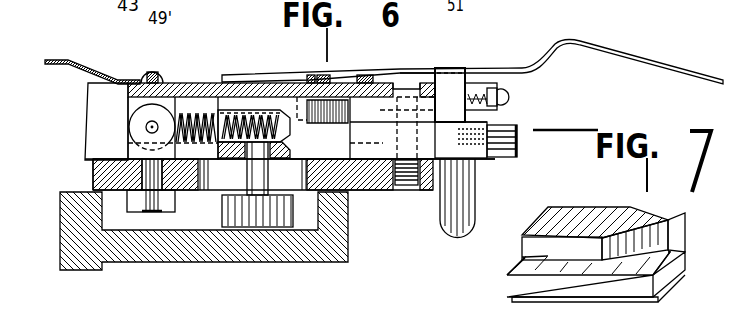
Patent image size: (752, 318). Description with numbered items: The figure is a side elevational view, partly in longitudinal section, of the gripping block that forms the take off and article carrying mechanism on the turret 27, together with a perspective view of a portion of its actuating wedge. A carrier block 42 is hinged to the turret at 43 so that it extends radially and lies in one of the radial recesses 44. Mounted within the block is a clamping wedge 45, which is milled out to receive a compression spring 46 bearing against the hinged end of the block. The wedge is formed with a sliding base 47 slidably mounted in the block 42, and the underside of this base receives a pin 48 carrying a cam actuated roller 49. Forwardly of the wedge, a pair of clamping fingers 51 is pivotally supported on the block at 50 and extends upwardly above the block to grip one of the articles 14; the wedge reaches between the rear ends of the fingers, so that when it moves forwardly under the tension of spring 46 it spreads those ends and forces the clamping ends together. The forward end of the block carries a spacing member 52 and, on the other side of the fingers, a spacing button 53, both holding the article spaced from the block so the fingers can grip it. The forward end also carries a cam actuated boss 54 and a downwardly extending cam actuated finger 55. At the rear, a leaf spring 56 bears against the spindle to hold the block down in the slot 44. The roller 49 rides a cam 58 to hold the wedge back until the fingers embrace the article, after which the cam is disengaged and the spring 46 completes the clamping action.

In FIG. 6, the article 14 is at (547, 42).
In FIG. 6, the turret 27 is at (387, 183).
In FIG. 6, the carrier block 42 is at (183, 103).
In FIG. 6, the hinge 43 is at (143, 128).
In FIG. 6, the radial recess 44 is at (337, 180).
In FIG. 6, the clamping wedge 45 is at (337, 107).
In FIG. 7, the clamping wedge 45 is at (600, 217).
In FIG. 6, the compression spring 46 is at (205, 115).
In FIG. 6, the sliding base 47 is at (330, 150).
In FIG. 7, the sliding base 47 is at (677, 272).
In FIG. 6, the pin 48 is at (247, 170).
In FIG. 6, the cam actuated roller 49 is at (257, 218).
In FIG. 6, the pivot 50 is at (417, 83).
In FIG. 6, the clamping fingers 51 is at (455, 72).
In FIG. 6, the spacing member 52 is at (493, 82).
In FIG. 6, the spacing button 53 is at (318, 80).
In FIG. 6, the cam actuated boss 54 is at (510, 128).
In FIG. 6, the cam actuated finger 55 is at (463, 203).
In FIG. 6, the leaf spring 56 is at (100, 70).
In FIG. 6, the cam 58 is at (320, 215).